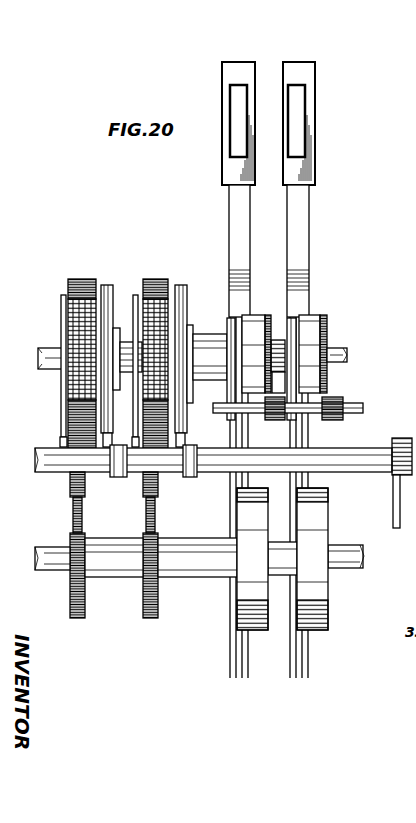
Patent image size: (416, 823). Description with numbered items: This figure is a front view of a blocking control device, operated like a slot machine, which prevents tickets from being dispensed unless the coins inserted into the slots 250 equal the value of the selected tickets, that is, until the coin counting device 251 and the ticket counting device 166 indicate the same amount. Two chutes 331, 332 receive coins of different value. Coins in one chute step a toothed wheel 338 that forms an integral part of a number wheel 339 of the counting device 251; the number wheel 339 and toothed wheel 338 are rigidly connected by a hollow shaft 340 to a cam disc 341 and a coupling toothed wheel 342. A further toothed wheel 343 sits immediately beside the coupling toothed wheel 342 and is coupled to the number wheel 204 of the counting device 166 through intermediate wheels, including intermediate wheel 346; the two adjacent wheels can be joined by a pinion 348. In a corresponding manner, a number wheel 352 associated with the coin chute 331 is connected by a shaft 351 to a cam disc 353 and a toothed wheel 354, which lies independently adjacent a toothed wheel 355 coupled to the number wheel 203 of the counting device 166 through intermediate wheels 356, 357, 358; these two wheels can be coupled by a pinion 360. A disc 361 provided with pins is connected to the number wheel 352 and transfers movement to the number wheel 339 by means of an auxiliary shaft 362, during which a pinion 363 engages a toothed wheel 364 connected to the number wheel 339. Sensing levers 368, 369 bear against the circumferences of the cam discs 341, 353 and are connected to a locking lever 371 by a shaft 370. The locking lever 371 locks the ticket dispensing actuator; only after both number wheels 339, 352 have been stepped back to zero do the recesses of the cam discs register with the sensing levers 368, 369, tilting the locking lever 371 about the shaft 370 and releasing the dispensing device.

The slots 250 is at (269, 73).
The coin chute 332 is at (229, 200).
The coin chute 331 is at (309, 200).
The pinion 348 is at (154, 279).
The toothed wheel 364 is at (248, 315).
The cam disc 353 is at (107, 285).
The toothed wheel 343 is at (135, 290).
The number wheel 339 is at (231, 318).
The shaft 351 is at (286, 335).
The pinion 360 is at (68, 283).
The disc 361 is at (304, 316).
The cam disc 341 is at (187, 292).
The number wheel 352 is at (322, 316).
The toothed wheel 355 is at (70, 322).
The hollow shaft 340 is at (208, 340).
The counting device 251 is at (345, 348).
The toothed wheel 354 is at (72, 375).
The toothed wheel 338 is at (236, 390).
The coupling toothed wheel 342 is at (168, 418).
The pinion 363 is at (288, 419).
The auxiliary shaft 362 is at (339, 419).
The intermediate wheel 356 is at (60, 440).
The shaft 370 is at (366, 470).
The sensing lever 369 is at (110, 477).
The sensing lever 368 is at (186, 477).
The intermediate wheel 357 is at (72, 520).
The locking lever 371 is at (393, 522).
The intermediate wheel 358 is at (70, 600).
The intermediate wheel 346 is at (143, 605).
The number wheel 204 is at (240, 614).
The number wheel 203 is at (328, 616).
The counting device 166 is at (280, 618).